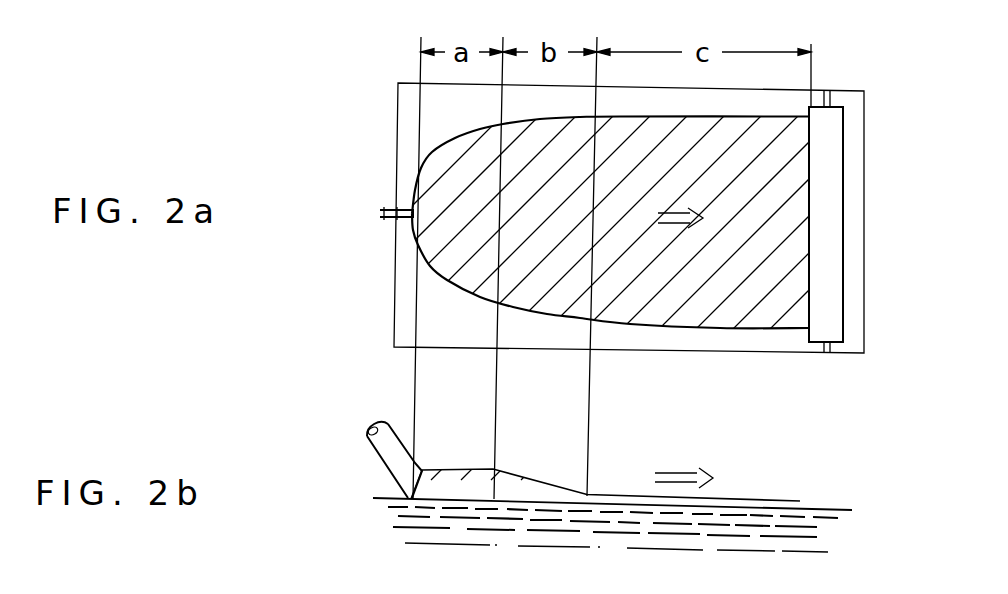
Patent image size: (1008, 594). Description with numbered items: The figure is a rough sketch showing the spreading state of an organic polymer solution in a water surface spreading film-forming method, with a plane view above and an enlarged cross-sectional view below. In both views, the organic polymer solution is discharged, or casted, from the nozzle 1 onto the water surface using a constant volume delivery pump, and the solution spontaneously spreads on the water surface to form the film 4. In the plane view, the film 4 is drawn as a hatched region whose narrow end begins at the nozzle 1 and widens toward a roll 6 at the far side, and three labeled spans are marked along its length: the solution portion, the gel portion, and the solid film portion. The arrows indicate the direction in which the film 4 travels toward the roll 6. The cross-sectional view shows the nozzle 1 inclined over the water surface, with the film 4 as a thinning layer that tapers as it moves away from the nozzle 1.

In FIG. 2a, the nozzle 1 is at (385, 207).
In FIG. 2b, the nozzle 1 is at (388, 455).
In FIG. 2a, the film 4 is at (760, 322).
In FIG. 2b, the film 4 is at (759, 498).
In FIG. 2a, the roll 6 is at (828, 312).